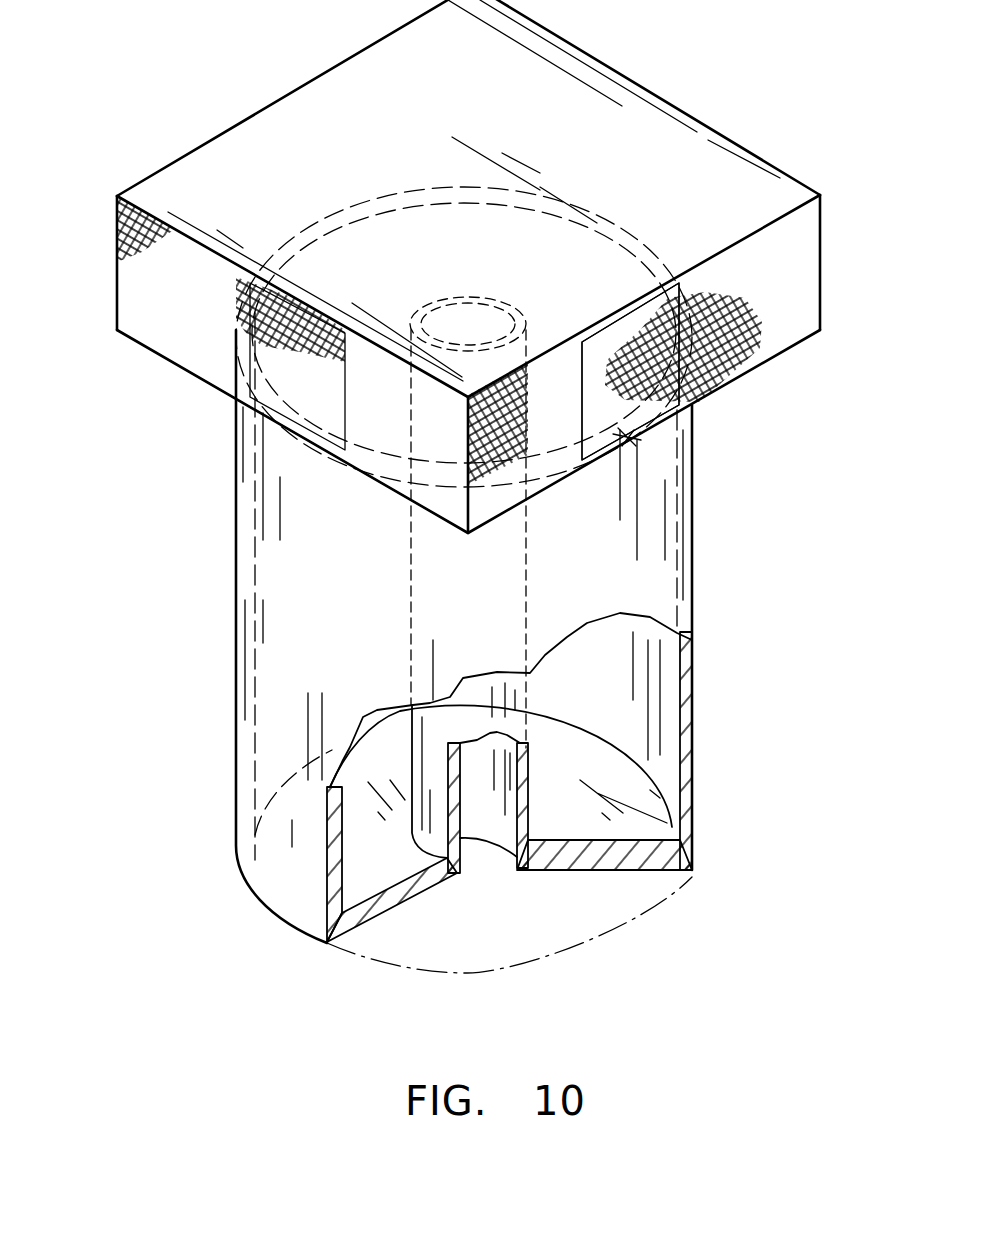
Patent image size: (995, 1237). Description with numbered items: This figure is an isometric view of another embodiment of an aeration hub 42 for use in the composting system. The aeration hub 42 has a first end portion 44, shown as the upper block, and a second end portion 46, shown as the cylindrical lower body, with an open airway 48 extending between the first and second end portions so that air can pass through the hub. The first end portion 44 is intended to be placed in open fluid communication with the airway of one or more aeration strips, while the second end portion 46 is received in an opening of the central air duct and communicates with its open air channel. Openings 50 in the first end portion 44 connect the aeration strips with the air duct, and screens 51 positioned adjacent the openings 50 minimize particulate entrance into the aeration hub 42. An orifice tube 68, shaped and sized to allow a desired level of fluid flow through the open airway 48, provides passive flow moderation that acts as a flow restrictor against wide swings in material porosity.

The aeration hub 42 is at (93, 172).
The first end portion 44 is at (154, 280).
The second end portion 46 is at (242, 847).
The open airway 48 is at (479, 792).
The openings 50 is at (634, 442).
The screens 51 is at (746, 377).
The orifice tube 68 is at (500, 707).